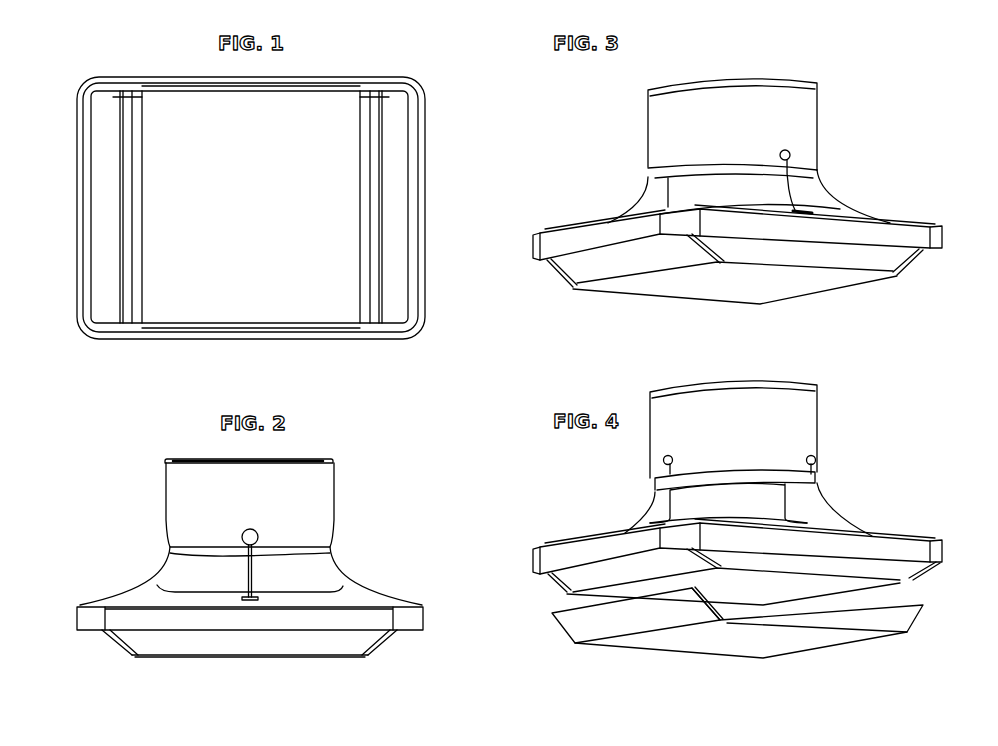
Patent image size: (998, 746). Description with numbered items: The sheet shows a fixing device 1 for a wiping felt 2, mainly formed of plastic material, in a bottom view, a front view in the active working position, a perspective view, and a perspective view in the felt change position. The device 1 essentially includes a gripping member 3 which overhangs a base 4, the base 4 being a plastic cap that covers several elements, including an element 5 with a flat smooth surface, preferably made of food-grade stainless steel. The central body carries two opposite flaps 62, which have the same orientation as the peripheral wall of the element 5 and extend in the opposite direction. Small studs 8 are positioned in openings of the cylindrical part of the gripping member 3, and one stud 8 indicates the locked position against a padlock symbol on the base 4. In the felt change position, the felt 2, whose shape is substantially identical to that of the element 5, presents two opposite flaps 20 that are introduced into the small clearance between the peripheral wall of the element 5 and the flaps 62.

In FIG. 1, the fixing device 1 is at (273, 201).
In FIG. 2, the fixing device 1 is at (271, 580).
In FIG. 3, the fixing device 1 is at (746, 192).
In FIG. 4, the fixing device 1 is at (750, 518).
In FIG. 4, the wiping felt 2 is at (748, 626).
In FIG. 2, the gripping member 3 is at (312, 497).
In FIG. 3, the gripping member 3 is at (792, 102).
In FIG. 4, the gripping member 3 is at (784, 412).
In FIG. 1, the base 4 is at (425, 158).
In FIG. 2, the base 4 is at (362, 572).
In FIG. 3, the base 4 is at (850, 193).
In FIG. 4, the base 4 is at (887, 523).
In FIG. 1, the element with a flat smooth surface 5 is at (300, 215).
In FIG. 2, the element with a flat smooth surface 5 is at (277, 662).
In FIG. 3, the element with a flat smooth surface 5 is at (813, 288).
In FIG. 3, the studs 8 is at (790, 153).
In FIG. 4, the studs 8 is at (663, 460).
In FIG. 4, the flaps of the felt 20 is at (613, 622).
In FIG. 1, the flaps of the pinching member 62 is at (105, 258).
In FIG. 2, the flaps of the pinching member 62 is at (110, 640).
In FIG. 3, the flaps of the pinching member 62 is at (578, 263).